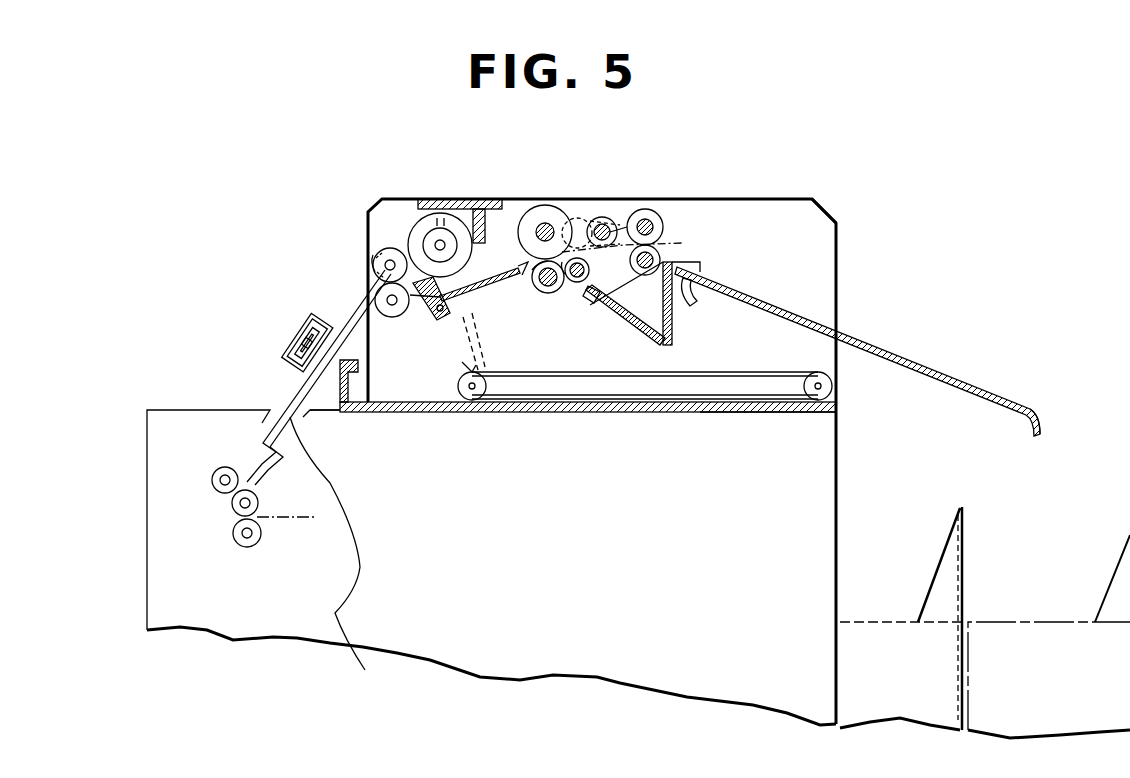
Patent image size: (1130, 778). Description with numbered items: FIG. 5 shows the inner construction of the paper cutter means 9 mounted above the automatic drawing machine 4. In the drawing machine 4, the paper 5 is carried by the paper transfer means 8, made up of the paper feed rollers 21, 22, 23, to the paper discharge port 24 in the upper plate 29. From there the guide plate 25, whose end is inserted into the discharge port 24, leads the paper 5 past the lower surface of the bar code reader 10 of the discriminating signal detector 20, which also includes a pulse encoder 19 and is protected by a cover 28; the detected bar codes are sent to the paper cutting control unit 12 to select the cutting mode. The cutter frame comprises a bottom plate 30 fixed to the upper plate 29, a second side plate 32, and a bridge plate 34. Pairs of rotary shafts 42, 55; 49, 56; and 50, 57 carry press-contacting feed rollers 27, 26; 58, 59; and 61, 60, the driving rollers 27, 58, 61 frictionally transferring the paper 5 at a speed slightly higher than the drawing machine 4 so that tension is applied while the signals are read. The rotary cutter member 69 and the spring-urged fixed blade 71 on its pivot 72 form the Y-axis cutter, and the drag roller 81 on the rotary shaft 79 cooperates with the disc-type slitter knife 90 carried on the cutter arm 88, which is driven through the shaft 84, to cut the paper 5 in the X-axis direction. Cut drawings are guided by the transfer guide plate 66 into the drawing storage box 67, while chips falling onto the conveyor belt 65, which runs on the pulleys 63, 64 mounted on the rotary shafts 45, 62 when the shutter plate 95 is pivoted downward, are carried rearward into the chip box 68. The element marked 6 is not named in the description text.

The automatic drawing machine 4 is at (578, 655).
The paper 5 is at (297, 517).
The discharge guide 6 is at (883, 373).
The paper transfer means 8 is at (110, 462).
The paper cutter means 9 is at (786, 205).
The bar code reader 10 is at (293, 367).
The paper cutting control unit 12 is at (549, 230).
The pulse encoder 19 is at (307, 343).
The discriminating signal detector 20 is at (243, 319).
The paper feed roller 21 is at (237, 547).
The paper feed roller 22 is at (230, 508).
The paper feed roller 23 is at (210, 481).
The paper discharge port 24 is at (287, 400).
The guide plate 25 is at (365, 670).
The feed roller 26 is at (377, 257).
The feed roller 27 is at (375, 300).
The cover 28 is at (307, 342).
The upper plate 29 is at (160, 410).
The bottom plate 30 is at (680, 400).
The second side plate 32 is at (837, 201).
The bridge plate 34 is at (480, 230).
The rotary shaft 42 is at (368, 330).
The rotary shaft 45 is at (478, 282).
The rotary shaft 49 is at (565, 282).
The rotary shaft 50 is at (660, 248).
The rotary shaft 55 is at (388, 255).
The rotary shaft 56 is at (602, 217).
The rotary shaft 57 is at (660, 210).
The feed roller 58 is at (548, 294).
The feed roller 59 is at (538, 204).
The feed roller 60 is at (663, 252).
The feed roller 61 is at (660, 270).
The rotary shaft 62 is at (833, 387).
The pulley 63 is at (474, 401).
The pulley 64 is at (836, 447).
The conveyor belt 65 is at (724, 412).
The transfer guide plate 66 is at (850, 340).
The drawing storage box 67 is at (1017, 640).
The chip box 68 is at (883, 640).
The rotary cutter member 69 is at (447, 225).
The fixed blade 71 is at (408, 322).
The pivot 72 is at (440, 325).
The rotary shaft 79 is at (590, 305).
The drag roller 81 is at (580, 283).
The shaft 84 is at (630, 214).
The cutter arm 88 is at (648, 212).
The slitter knife 90 is at (592, 222).
The shutter plate 95 is at (530, 272).